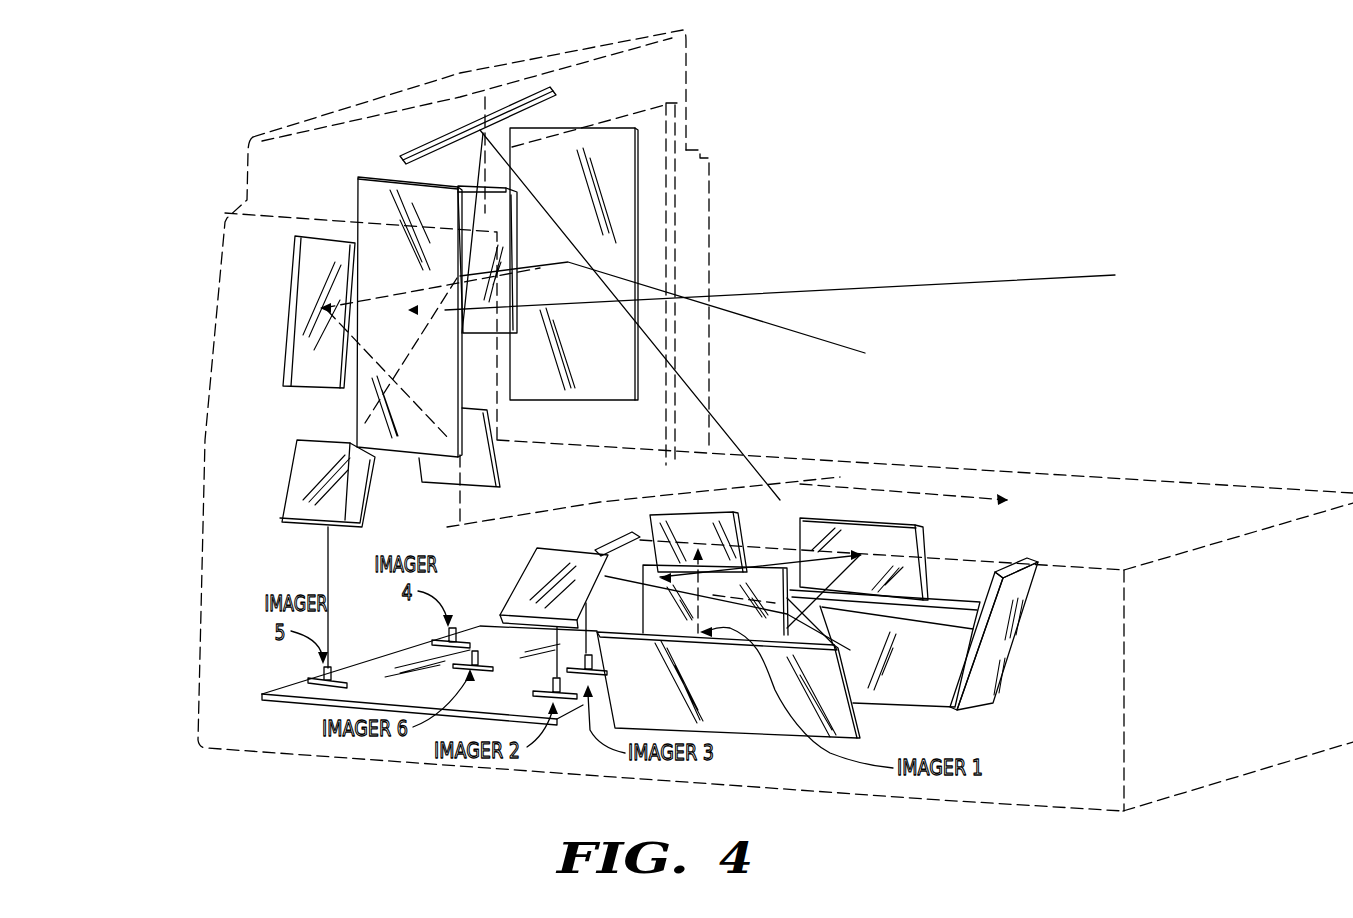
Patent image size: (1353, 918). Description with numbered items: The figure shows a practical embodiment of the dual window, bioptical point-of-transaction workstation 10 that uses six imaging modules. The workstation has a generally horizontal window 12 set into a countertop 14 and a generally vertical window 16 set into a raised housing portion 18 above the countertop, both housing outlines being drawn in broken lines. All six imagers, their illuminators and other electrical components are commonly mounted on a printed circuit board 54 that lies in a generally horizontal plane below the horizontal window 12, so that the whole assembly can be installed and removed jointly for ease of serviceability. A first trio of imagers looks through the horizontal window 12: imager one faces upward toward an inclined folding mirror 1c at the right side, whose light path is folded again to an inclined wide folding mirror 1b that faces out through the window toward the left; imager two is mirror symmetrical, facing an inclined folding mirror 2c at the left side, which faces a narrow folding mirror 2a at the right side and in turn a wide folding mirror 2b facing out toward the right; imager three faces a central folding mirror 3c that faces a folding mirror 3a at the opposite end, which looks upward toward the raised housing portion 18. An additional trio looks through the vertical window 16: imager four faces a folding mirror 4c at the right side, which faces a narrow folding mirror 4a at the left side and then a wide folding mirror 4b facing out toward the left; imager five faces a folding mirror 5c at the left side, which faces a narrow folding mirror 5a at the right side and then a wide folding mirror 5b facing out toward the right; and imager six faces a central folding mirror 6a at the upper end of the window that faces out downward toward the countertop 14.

The point-of-transaction workstation 10 is at (902, 236).
The generally horizontal window 12 is at (960, 488).
The countertop 14 is at (1232, 485).
The generally vertical window 16 is at (652, 398).
The raised housing portion 18 is at (222, 240).
The printed circuit board 54 is at (302, 700).
The inclined wide folding mirror 1b is at (905, 697).
The inclined folding mirror 1c is at (675, 512).
The inclined narrow folding mirror 2a is at (923, 545).
The inclined wide folding mirror 2b is at (755, 738).
The inclined folding mirror 2c is at (535, 549).
The inclined folding mirror 3a is at (1017, 598).
The inclined folding mirror 3c is at (628, 533).
The inclined narrow folding mirror 4a is at (313, 390).
The inclined wide folding mirror 4b is at (578, 127).
The inclined folding mirror 4c is at (449, 483).
The inclined narrow folding mirror 5a is at (516, 230).
The inclined wide folding mirror 5b is at (367, 180).
The inclined folding mirror 5c is at (298, 528).
The inclined folding mirror 6a is at (457, 129).